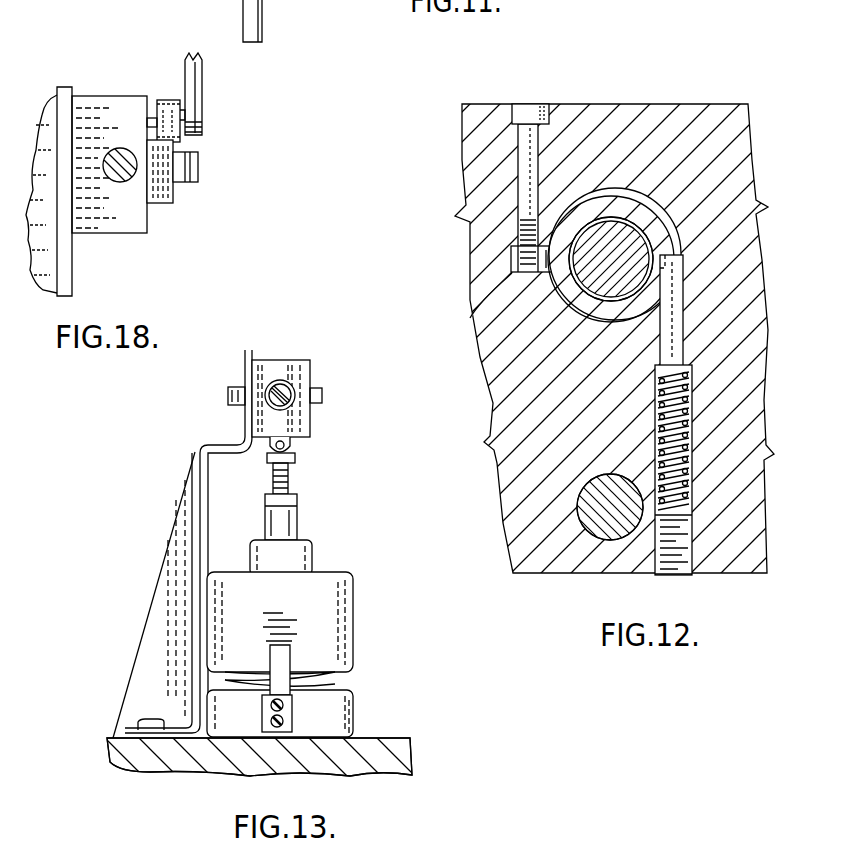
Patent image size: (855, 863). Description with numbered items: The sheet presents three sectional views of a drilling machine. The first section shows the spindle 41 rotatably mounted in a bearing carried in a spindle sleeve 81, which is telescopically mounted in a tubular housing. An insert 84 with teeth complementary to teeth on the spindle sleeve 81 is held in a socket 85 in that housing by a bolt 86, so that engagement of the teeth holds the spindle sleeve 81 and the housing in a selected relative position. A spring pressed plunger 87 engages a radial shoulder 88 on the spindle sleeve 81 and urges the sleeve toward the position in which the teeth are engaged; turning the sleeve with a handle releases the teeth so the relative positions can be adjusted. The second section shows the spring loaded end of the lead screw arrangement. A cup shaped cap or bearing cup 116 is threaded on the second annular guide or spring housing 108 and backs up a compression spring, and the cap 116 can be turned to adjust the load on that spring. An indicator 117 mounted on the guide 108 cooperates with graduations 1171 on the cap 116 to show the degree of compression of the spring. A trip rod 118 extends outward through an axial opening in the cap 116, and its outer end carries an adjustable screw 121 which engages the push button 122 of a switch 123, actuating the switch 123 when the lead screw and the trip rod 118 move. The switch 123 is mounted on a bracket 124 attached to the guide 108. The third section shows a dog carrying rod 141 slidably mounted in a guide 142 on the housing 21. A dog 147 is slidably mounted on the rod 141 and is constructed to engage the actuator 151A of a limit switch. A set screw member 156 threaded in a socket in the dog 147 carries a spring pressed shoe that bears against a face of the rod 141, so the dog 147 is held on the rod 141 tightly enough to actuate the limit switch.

In FIG. 18, the housing 21 is at (50, 100).
In FIG. 18, the guide 142 is at (128, 122).
In FIG. 18, the dog carrying rod 141 is at (125, 176).
In FIG. 18, the actuator 151A is at (165, 108).
In FIG. 18, the dog 147 is at (173, 195).
In FIG. 18, the set screw member 156 is at (198, 159).
In FIG. 12, the bolt 86 is at (530, 112).
In FIG. 12, the insert 84 is at (512, 258).
In FIG. 12, the socket 85 is at (480, 296).
In FIG. 12, the spindle sleeve 81 is at (650, 226).
In FIG. 12, the spindle 41 is at (638, 247).
In FIG. 12, the radial shoulder 88 is at (672, 272).
In FIG. 12, the spring pressed plunger 87 is at (670, 320).
In FIG. 13, the second annular guide or spring housing 108 is at (115, 737).
In FIG. 13, the bracket 124 is at (170, 570).
In FIG. 13, the switch 123 is at (282, 365).
In FIG. 13, the push button 122 is at (291, 443).
In FIG. 13, the adjustable screw 121 is at (290, 484).
In FIG. 13, the trip rod 118 is at (282, 520).
In FIG. 13, the cap or bearing cup 116 is at (285, 558).
In FIG. 13, the graduations 1171 is at (285, 636).
In FIG. 13, the indicator 117 is at (285, 712).